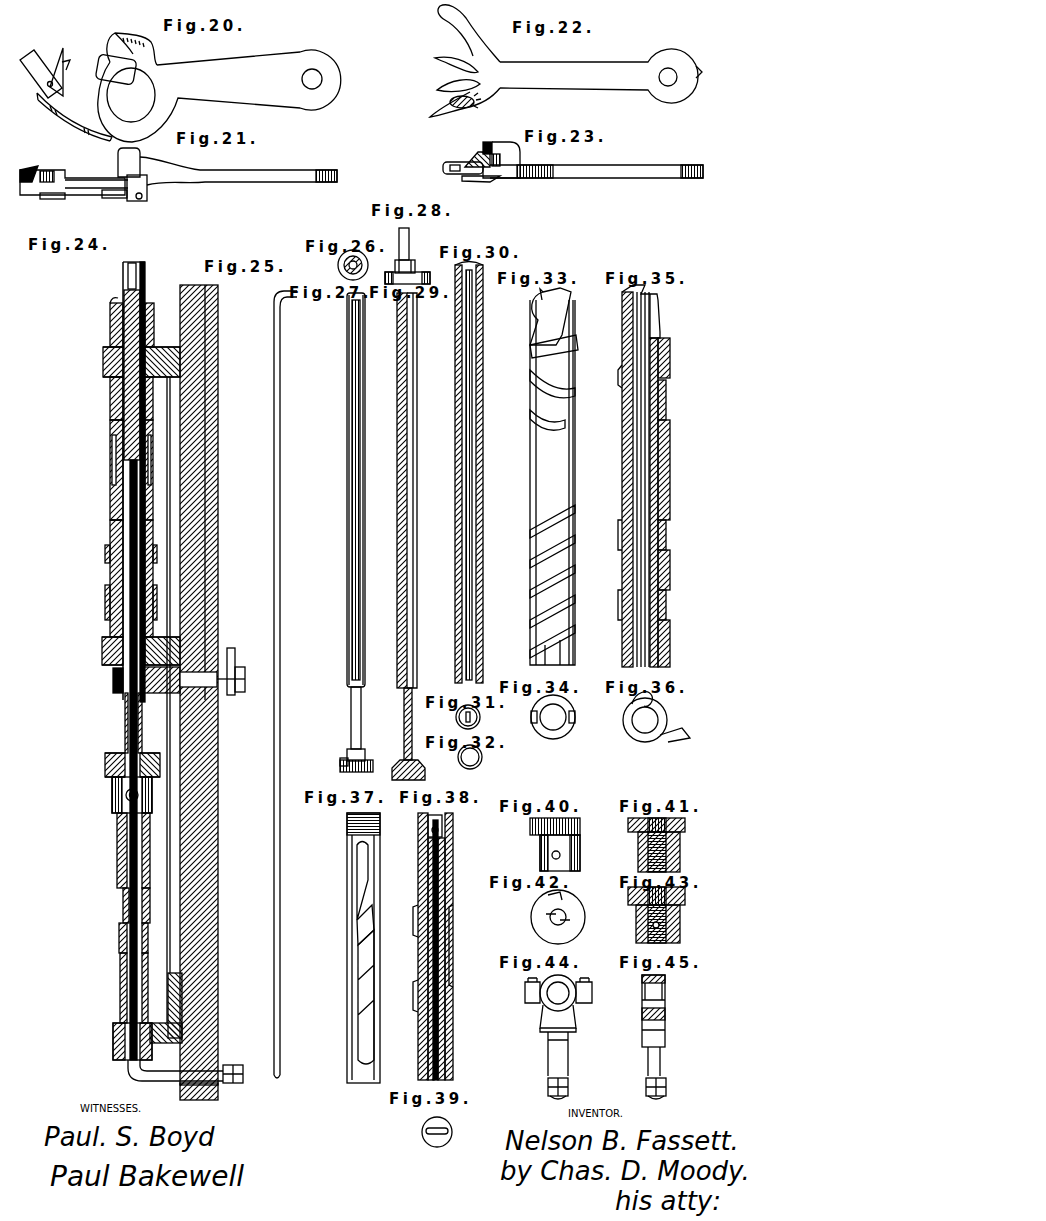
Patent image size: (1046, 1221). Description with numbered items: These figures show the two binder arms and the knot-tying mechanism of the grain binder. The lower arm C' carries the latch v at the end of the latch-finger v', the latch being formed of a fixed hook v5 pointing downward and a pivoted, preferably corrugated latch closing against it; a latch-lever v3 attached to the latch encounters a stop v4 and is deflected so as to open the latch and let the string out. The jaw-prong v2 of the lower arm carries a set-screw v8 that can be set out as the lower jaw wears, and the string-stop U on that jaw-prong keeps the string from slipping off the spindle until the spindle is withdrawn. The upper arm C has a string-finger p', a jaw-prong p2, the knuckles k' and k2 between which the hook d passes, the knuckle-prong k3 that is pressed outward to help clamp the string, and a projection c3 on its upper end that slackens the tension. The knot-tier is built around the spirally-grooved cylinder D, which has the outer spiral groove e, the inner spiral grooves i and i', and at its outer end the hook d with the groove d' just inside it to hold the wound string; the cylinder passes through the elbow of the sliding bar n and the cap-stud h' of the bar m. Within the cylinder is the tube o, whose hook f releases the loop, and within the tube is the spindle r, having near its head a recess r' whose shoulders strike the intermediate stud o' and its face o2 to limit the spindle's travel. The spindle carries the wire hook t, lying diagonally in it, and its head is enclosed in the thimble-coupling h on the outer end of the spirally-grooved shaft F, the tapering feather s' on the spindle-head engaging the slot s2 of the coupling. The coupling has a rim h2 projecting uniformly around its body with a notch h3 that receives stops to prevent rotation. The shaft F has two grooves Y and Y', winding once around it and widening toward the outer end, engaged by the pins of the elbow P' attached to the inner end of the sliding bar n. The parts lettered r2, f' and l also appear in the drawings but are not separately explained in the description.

In FIG. 20, the lower arm C' is at (219, 96).
In FIG. 21, the lower arm C' is at (238, 181).
In FIG. 20, the string-stop U is at (116, 34).
In FIG. 21, the string-stop U is at (118, 160).
In FIG. 20, the latch v is at (41, 80).
In FIG. 21, the latch v is at (72, 177).
In FIG. 20, the latch-finger v' is at (74, 117).
In FIG. 21, the latch-finger v' is at (96, 184).
In FIG. 20, the jaw-prong of the lower arm v2 is at (153, 43).
In FIG. 21, the jaw-prong of the lower arm v2 is at (148, 190).
In FIG. 21, the latch-lever v3 is at (56, 199).
In FIG. 20, the stop v4 is at (75, 60).
In FIG. 21, the fixed hook v5 is at (27, 166).
In FIG. 21, the set-screw v8 is at (147, 203).
In FIG. 20, the bar m is at (116, 69).
In FIG. 24, the bar m is at (218, 360).
In FIG. 22, the upper arm C is at (564, 61).
In FIG. 23, the upper arm C is at (596, 181).
In FIG. 22, the projection c3 is at (708, 76).
In FIG. 22, the string-finger p' is at (425, 24).
In FIG. 23, the string-finger p' is at (454, 170).
In FIG. 22, the jaw-prong of the upper arm p2 is at (443, 107).
In FIG. 23, the jaw-prong of the upper arm p2 is at (482, 184).
In FIG. 22, the knuckle k' is at (444, 59).
In FIG. 23, the knuckle k' is at (472, 149).
In FIG. 22, the outer knuckle k2 is at (445, 86).
In FIG. 23, the outer knuckle k2 is at (503, 155).
In FIG. 22, the knuckle-prong k3 is at (480, 70).
In FIG. 23, the knuckle-prong k3 is at (488, 142).
In FIG. 24, the spindle r is at (134, 661).
In FIG. 27, the spindle r is at (361, 490).
In FIG. 29, the spindle r is at (401, 490).
In FIG. 24, the recess r' is at (116, 729).
In FIG. 27, the recess r' is at (349, 724).
In FIG. 28, the recess r' is at (413, 241).
In FIG. 29, the recess r' is at (399, 724).
In FIG. 26, the rod foot r2 is at (368, 266).
In FIG. 27, the rod foot r2 is at (365, 769).
In FIG. 28, the rod foot r2 is at (430, 280).
In FIG. 29, the rod foot r2 is at (422, 776).
In FIG. 24, the tube o is at (114, 284).
In FIG. 30, the tube o is at (471, 475).
In FIG. 31, the tube o is at (481, 716).
In FIG. 32, the tube o is at (477, 757).
In FIG. 44, the tube o is at (558, 1037).
In FIG. 45, the tube o is at (654, 1037).
In FIG. 24, the intermediate stud o' is at (179, 671).
In FIG. 24, the stud face o2 is at (125, 723).
In FIG. 45, the stud face o2 is at (665, 1012).
In FIG. 24, the hook f is at (146, 280).
In FIG. 30, the hook f is at (469, 473).
In FIG. 31, the hook f is at (458, 717).
In FIG. 24, the tube liner f' is at (149, 318).
In FIG. 33, the hook d is at (556, 314).
In FIG. 35, the hook d is at (646, 311).
In FIG. 36, the hook d is at (631, 702).
In FIG. 24, the groove d' is at (121, 322).
In FIG. 33, the groove d' is at (554, 336).
In FIG. 35, the groove d' is at (611, 316).
In FIG. 24, the thimble-coupling h is at (133, 725).
In FIG. 40, the thimble-coupling h is at (560, 853).
In FIG. 41, the thimble-coupling h is at (667, 852).
In FIG. 43, the thimble-coupling h is at (666, 924).
In FIG. 24, the cap-stud h' is at (133, 362).
In FIG. 40, the cap-stud h' is at (567, 830).
In FIG. 24, the rim h2 is at (105, 770).
In FIG. 40, the rim h2 is at (545, 829).
In FIG. 41, the rim h2 is at (667, 826).
In FIG. 42, the rim h2 is at (558, 917).
In FIG. 43, the rim h2 is at (667, 893).
In FIG. 41, the notch h3 is at (632, 830).
In FIG. 42, the notch h3 is at (549, 898).
In FIG. 43, the notch h3 is at (661, 892).
In FIG. 24, the outer spiral groove e is at (110, 410).
In FIG. 33, the outer spiral groove e is at (530, 402).
In FIG. 35, the outer spiral groove e is at (622, 378).
In FIG. 24, the spirally-grooved cylinder D is at (110, 440).
In FIG. 33, the spirally-grooved cylinder D is at (552, 482).
In FIG. 34, the spirally-grooved cylinder D is at (553, 727).
In FIG. 35, the spirally-grooved cylinder D is at (640, 479).
In FIG. 36, the spirally-grooved cylinder D is at (656, 725).
In FIG. 24, the inner spiral groove i is at (125, 547).
In FIG. 35, the inner spiral groove i is at (638, 486).
In FIG. 24, the inner spiral groove i' is at (126, 598).
In FIG. 33, the inner spiral groove i' is at (543, 585).
In FIG. 35, the inner spiral groove i' is at (638, 608).
In FIG. 24, the spirally-grooved shaft F is at (117, 850).
In FIG. 37, the spirally-grooved shaft F is at (364, 886).
In FIG. 38, the spirally-grooved shaft F is at (444, 902).
In FIG. 39, the spirally-grooved shaft F is at (422, 1144).
In FIG. 24, the groove Y is at (123, 988).
In FIG. 37, the groove Y is at (348, 997).
In FIG. 38, the groove Y is at (411, 996).
In FIG. 24, the groove Y' is at (123, 920).
In FIG. 37, the groove Y' is at (348, 894).
In FIG. 38, the groove Y' is at (426, 946).
In FIG. 24, the sliding bar n is at (166, 710).
In FIG. 24, the elbow P' is at (118, 1039).
In FIG. 24, the elbow tube l is at (185, 1068).
In FIG. 25, the wire hook t is at (283, 338).
In FIG. 27, the wire hook t is at (347, 328).
In FIG. 26, the feather s' is at (344, 265).
In FIG. 27, the feather s' is at (348, 762).
In FIG. 28, the feather s' is at (414, 259).
In FIG. 42, the slot s2 is at (558, 916).